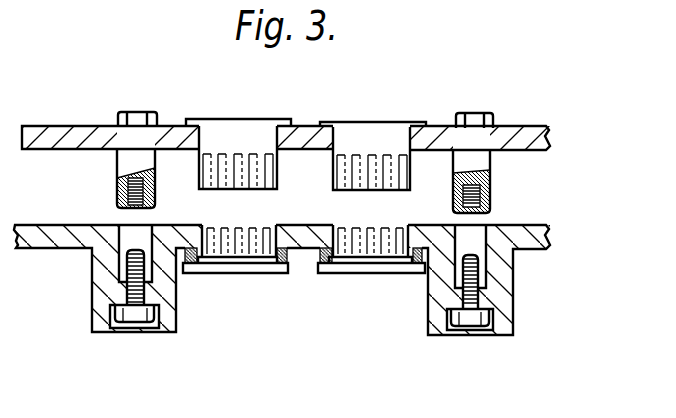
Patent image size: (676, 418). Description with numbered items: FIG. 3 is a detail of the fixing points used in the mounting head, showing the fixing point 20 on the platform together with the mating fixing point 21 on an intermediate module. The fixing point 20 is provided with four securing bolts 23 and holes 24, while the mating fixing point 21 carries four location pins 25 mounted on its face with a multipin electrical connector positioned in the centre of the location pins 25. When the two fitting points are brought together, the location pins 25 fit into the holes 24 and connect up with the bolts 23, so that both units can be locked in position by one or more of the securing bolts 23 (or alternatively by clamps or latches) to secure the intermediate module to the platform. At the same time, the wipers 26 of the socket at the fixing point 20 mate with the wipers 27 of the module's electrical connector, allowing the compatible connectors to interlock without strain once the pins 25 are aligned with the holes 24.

The fixing point 20 is at (473, 343).
The mating fixing point 21 is at (472, 102).
The securing bolt 23 is at (138, 317).
The hole 24 is at (128, 243).
The location pin 25 is at (130, 163).
The wiper 26 is at (240, 283).
The wiper 27 is at (238, 185).